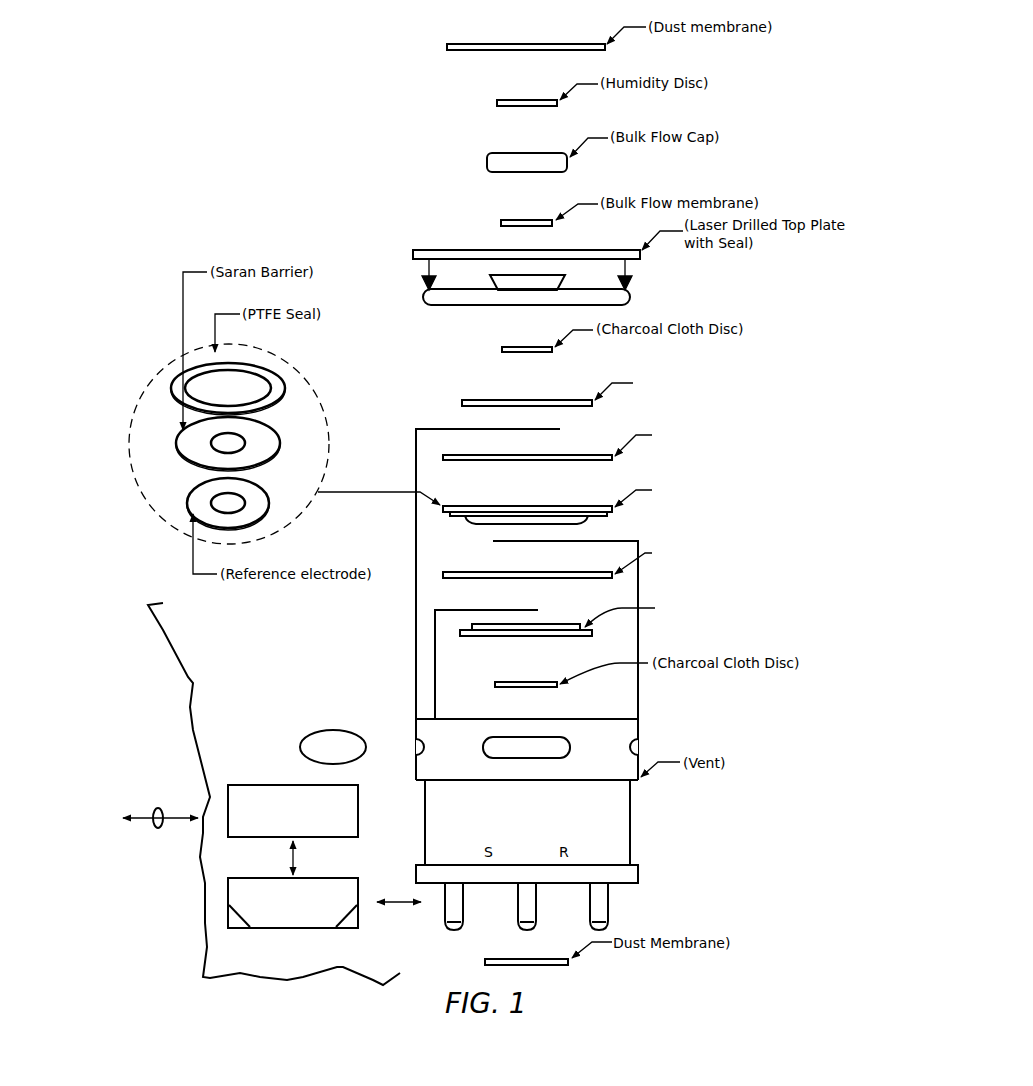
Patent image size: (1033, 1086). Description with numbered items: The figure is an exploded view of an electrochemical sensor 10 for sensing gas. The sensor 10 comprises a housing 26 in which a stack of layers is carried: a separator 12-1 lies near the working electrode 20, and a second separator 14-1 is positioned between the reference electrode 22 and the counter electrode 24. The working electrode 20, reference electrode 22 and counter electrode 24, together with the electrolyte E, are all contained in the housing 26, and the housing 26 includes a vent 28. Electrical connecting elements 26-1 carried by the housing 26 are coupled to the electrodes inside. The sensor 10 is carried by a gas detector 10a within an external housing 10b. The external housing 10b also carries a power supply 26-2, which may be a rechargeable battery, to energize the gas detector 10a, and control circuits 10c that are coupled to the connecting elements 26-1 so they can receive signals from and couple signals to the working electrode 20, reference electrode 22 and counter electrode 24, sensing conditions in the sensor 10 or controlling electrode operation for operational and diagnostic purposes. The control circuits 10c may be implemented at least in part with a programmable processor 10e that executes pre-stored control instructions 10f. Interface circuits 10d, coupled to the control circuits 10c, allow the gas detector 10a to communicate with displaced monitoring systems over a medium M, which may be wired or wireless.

The electrochemical sensor 10 is at (288, 82).
The gas detector 10a is at (176, 736).
The external housing 10b is at (190, 684).
The control circuits 10c is at (327, 878).
The interface circuits 10d is at (360, 792).
The programmable processor 10e is at (349, 930).
The pre-stored control instructions 10f is at (240, 930).
The separator 12-1 is at (736, 428).
The separator 14-1 is at (736, 548).
The working electrode 20 is at (768, 375).
The reference electrode 22 is at (790, 481).
The counter electrode 24 is at (790, 601).
The housing 26 is at (425, 822).
The electrical connecting elements 26-1 is at (660, 902).
The power supply 26-2 is at (318, 756).
The vent 28 is at (708, 752).
The electrolyte E is at (447, 712).
The medium M is at (158, 830).